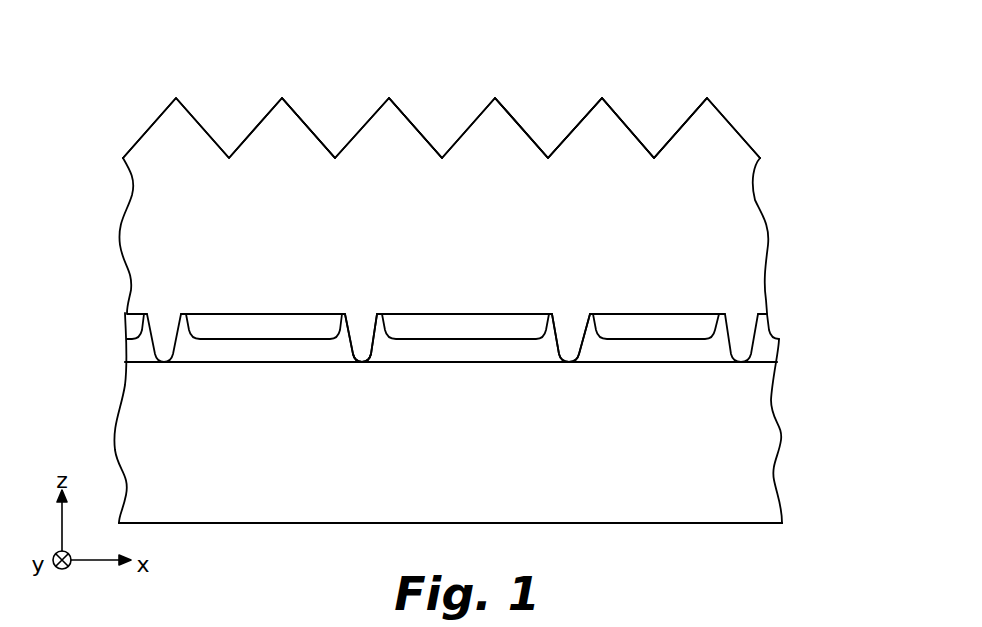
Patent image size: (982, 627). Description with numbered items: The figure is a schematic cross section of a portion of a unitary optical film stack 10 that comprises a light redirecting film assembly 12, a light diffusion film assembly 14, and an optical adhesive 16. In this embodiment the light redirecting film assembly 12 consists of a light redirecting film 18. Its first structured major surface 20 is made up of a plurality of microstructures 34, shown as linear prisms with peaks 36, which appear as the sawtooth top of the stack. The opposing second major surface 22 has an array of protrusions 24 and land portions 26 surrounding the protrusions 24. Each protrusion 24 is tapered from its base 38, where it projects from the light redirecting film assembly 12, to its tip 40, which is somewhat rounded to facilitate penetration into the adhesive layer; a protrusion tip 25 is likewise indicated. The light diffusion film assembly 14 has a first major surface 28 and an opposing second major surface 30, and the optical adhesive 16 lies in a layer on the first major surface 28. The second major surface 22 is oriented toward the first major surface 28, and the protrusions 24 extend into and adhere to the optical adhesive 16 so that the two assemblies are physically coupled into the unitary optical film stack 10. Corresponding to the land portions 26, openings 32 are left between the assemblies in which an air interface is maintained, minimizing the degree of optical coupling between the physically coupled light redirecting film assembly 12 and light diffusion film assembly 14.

The unitary optical film stack 10 is at (757, 73).
The light redirecting film assembly 12 is at (811, 110).
The light diffusion film assembly 14 is at (810, 522).
The optical adhesive 16 is at (768, 349).
The light redirecting film 18 is at (155, 142).
The first structured major surface 20 is at (404, 120).
The second major surface 22 is at (142, 322).
The protrusions 24 is at (176, 352).
The protrusion tip 25 is at (571, 363).
The land portions 26 is at (465, 314).
The first major surface of light diffusion film assembly 28 is at (685, 361).
The second major surface of light diffusion film assembly 30 is at (650, 523).
The openings 32 is at (608, 325).
The microstructures 34 is at (587, 132).
The peaks 36 is at (707, 99).
The base 38 is at (358, 313).
The tip 40 is at (358, 363).